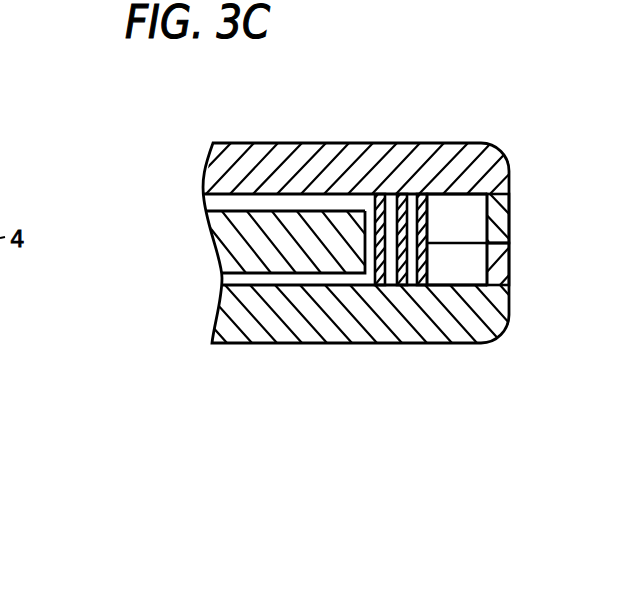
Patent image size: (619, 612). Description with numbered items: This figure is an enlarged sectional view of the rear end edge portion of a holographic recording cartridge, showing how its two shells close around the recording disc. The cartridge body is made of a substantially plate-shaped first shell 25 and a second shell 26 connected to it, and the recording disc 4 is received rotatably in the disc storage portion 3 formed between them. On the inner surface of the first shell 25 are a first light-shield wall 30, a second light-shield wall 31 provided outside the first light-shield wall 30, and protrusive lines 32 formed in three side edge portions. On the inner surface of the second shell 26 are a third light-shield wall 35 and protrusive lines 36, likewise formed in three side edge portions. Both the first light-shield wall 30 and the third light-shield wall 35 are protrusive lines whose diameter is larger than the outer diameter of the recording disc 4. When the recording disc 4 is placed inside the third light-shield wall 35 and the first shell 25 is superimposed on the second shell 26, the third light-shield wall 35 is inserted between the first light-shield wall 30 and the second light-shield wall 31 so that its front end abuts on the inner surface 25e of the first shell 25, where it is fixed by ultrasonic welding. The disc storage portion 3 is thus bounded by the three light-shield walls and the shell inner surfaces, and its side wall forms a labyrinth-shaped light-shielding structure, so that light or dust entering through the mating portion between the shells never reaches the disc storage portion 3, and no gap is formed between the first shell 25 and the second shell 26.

The disc storage portion 3 is at (245, 205).
The recording disc 4 is at (230, 244).
The first shell 25 is at (317, 150).
The inner surface of the first shell 25e is at (428, 211).
The second shell 26 is at (406, 330).
The first light-shield wall 30 is at (380, 276).
The second light-shield wall 31 is at (427, 284).
The protrusive lines 32 is at (510, 221).
The third light-shield wall 35 is at (401, 200).
The protrusive lines 36 is at (510, 265).